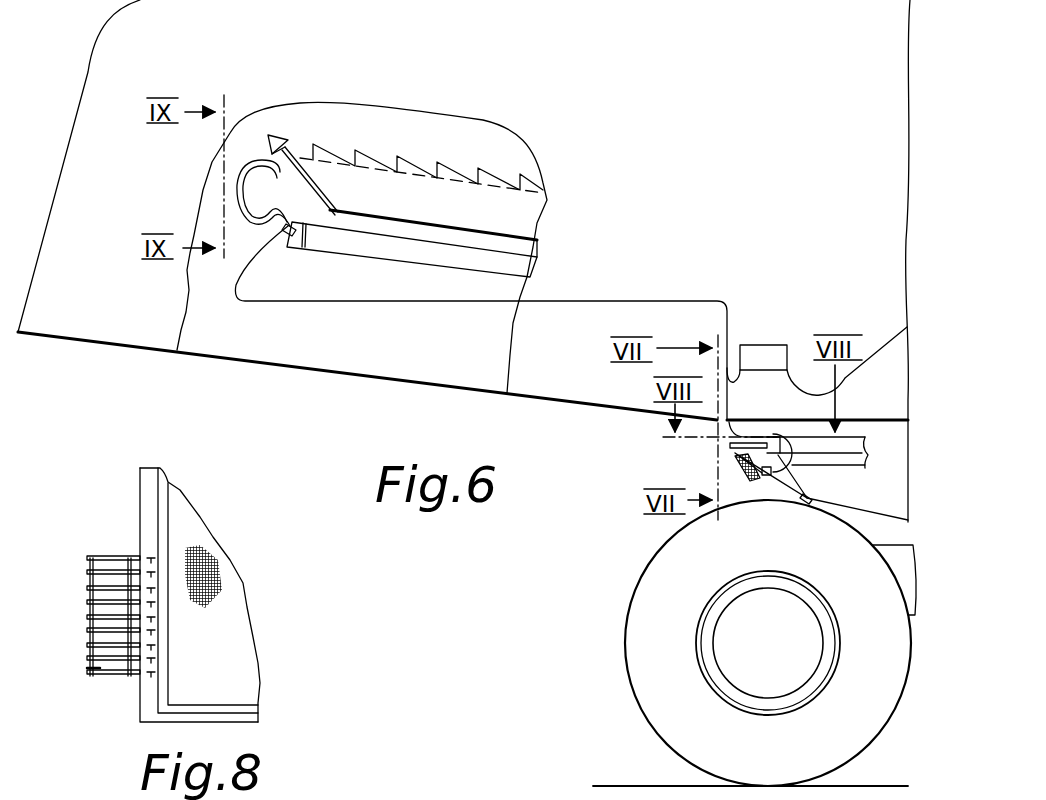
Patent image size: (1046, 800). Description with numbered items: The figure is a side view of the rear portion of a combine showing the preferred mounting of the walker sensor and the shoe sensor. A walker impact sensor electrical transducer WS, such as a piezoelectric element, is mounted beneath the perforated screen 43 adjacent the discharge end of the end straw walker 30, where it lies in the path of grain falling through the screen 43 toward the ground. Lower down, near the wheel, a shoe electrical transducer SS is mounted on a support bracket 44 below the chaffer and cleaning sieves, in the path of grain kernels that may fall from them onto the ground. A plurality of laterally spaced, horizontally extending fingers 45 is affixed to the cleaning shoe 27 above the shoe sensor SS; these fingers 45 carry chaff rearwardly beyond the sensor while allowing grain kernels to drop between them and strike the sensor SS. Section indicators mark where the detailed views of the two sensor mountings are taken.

In FIG. 6, the end straw walker 30 is at (493, 219).
In FIG. 6, the perforated screen 43 is at (367, 167).
In FIG. 6, the walker impact sensor electrical transducer WS is at (290, 176).
In FIG. 6, the cleaning shoe 27 is at (888, 500).
In FIG. 8, the cleaning shoe 27 is at (228, 677).
In FIG. 6, the fingers 45 is at (730, 446).
In FIG. 8, the fingers 45 is at (87, 647).
In FIG. 6, the shoe electrical transducer SS is at (735, 457).
In FIG. 8, the shoe electrical transducer SS is at (87, 668).
In FIG. 6, the support bracket 44 is at (783, 482).